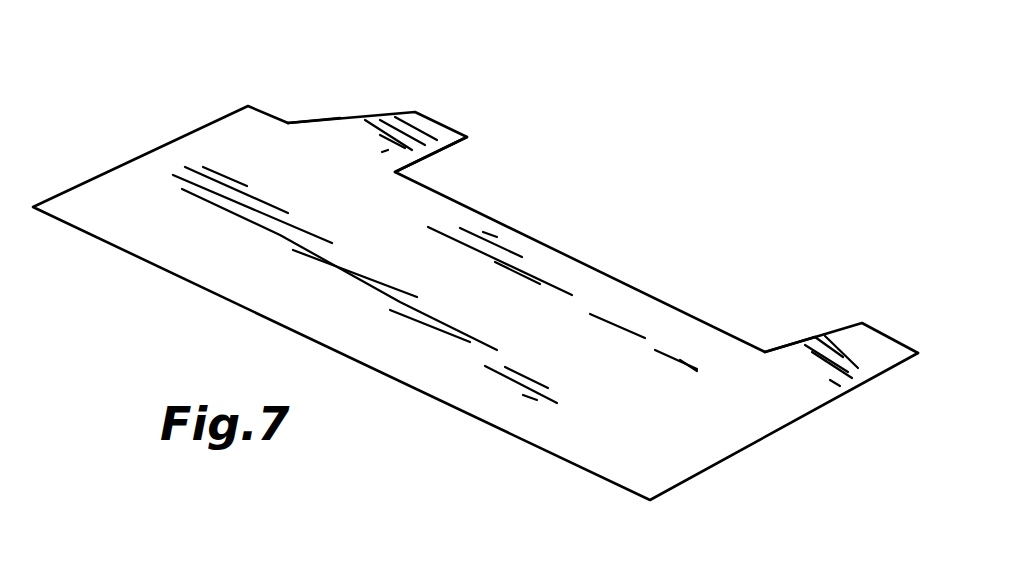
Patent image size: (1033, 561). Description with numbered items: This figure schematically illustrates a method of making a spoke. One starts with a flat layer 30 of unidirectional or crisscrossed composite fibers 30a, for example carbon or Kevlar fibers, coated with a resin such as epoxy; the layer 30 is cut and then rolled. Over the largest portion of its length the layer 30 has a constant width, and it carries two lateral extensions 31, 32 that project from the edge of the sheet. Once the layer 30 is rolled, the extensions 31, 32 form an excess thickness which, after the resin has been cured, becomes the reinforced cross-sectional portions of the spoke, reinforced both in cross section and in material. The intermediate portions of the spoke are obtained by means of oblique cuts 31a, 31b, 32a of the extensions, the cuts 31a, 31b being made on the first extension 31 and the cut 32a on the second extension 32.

The layer 30 is at (160, 242).
The composite fibers 30a is at (323, 263).
The lateral extension 31 is at (432, 130).
The oblique cut 31a is at (328, 118).
The oblique cut 31b is at (432, 154).
The lateral extension 32 is at (883, 347).
The oblique cut 32a is at (803, 340).